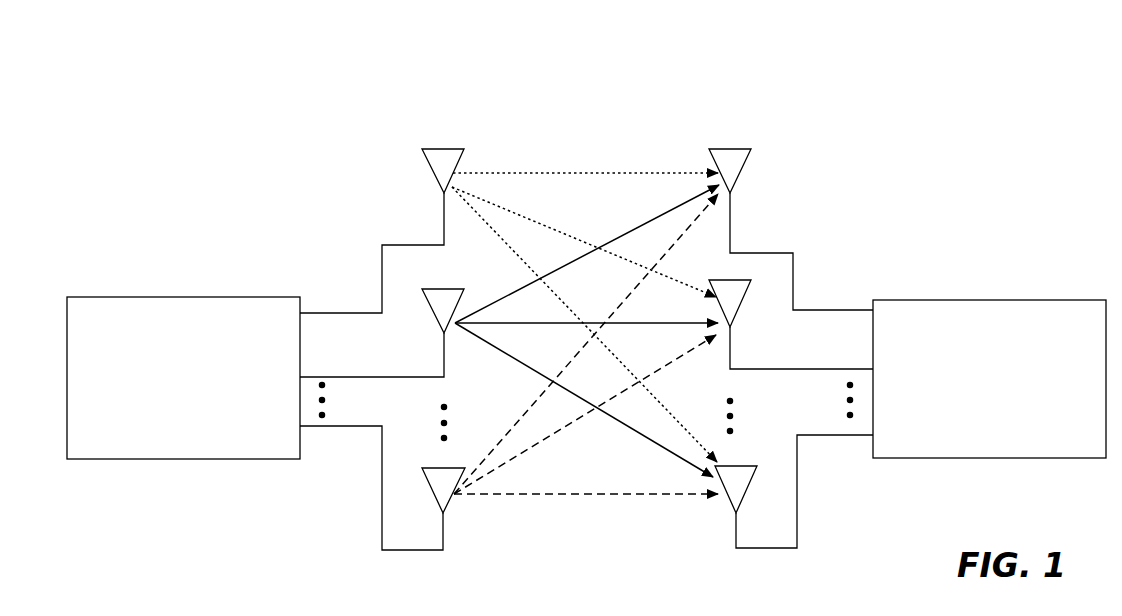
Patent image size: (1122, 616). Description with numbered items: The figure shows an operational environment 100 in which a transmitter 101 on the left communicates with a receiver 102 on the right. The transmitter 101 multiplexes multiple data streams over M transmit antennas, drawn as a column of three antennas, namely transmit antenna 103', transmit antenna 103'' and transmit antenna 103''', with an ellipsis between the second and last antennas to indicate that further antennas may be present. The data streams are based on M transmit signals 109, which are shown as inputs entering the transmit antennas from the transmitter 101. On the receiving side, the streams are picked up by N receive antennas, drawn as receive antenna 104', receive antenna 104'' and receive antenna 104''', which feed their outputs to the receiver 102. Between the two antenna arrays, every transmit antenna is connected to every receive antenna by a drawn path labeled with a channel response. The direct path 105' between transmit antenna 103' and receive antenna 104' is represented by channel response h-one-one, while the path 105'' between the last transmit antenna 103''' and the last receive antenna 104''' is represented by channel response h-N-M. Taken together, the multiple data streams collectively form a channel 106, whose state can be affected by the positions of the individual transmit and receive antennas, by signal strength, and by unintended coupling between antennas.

The operational environment 100 is at (629, 46).
The transmitter 101 is at (203, 430).
The receiver 102 is at (1010, 436).
The transmit antenna 103' is at (382, 231).
The transmit antenna 103'' is at (382, 333).
The transmit antenna 103''' is at (382, 488).
The receive antenna 104' is at (791, 229).
The receive antenna 104'' is at (791, 324).
The receive antenna 104''' is at (794, 491).
The direct path 105' is at (585, 123).
The data stream path 105'' is at (586, 533).
The channel 106 is at (594, 315).
The transmit signals 109 is at (350, 399).